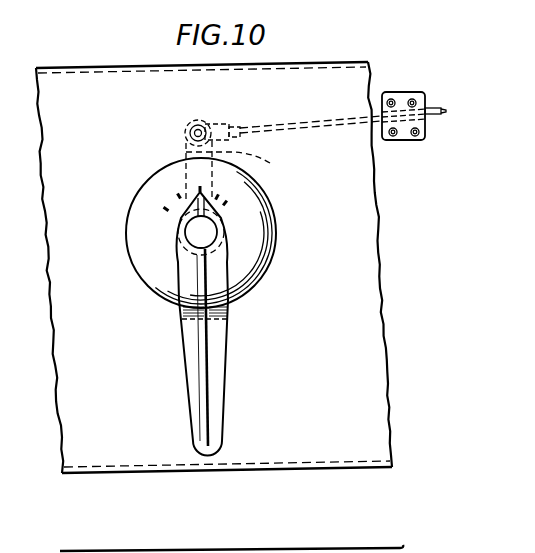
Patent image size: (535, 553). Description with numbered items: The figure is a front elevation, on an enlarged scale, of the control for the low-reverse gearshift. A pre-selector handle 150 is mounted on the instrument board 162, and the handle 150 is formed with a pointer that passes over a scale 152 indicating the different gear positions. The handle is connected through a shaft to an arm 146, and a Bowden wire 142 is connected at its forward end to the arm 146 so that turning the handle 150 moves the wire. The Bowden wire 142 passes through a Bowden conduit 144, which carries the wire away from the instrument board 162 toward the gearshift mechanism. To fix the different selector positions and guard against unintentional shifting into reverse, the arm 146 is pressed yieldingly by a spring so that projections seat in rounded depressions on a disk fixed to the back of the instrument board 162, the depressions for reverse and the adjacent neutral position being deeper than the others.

The Bowden wire 142 is at (283, 125).
The Bowden conduit 144 is at (425, 141).
The arm 146 is at (263, 157).
The pre-selector handle 150 is at (212, 362).
The scale 152 is at (155, 189).
The instrument board 162 is at (92, 410).